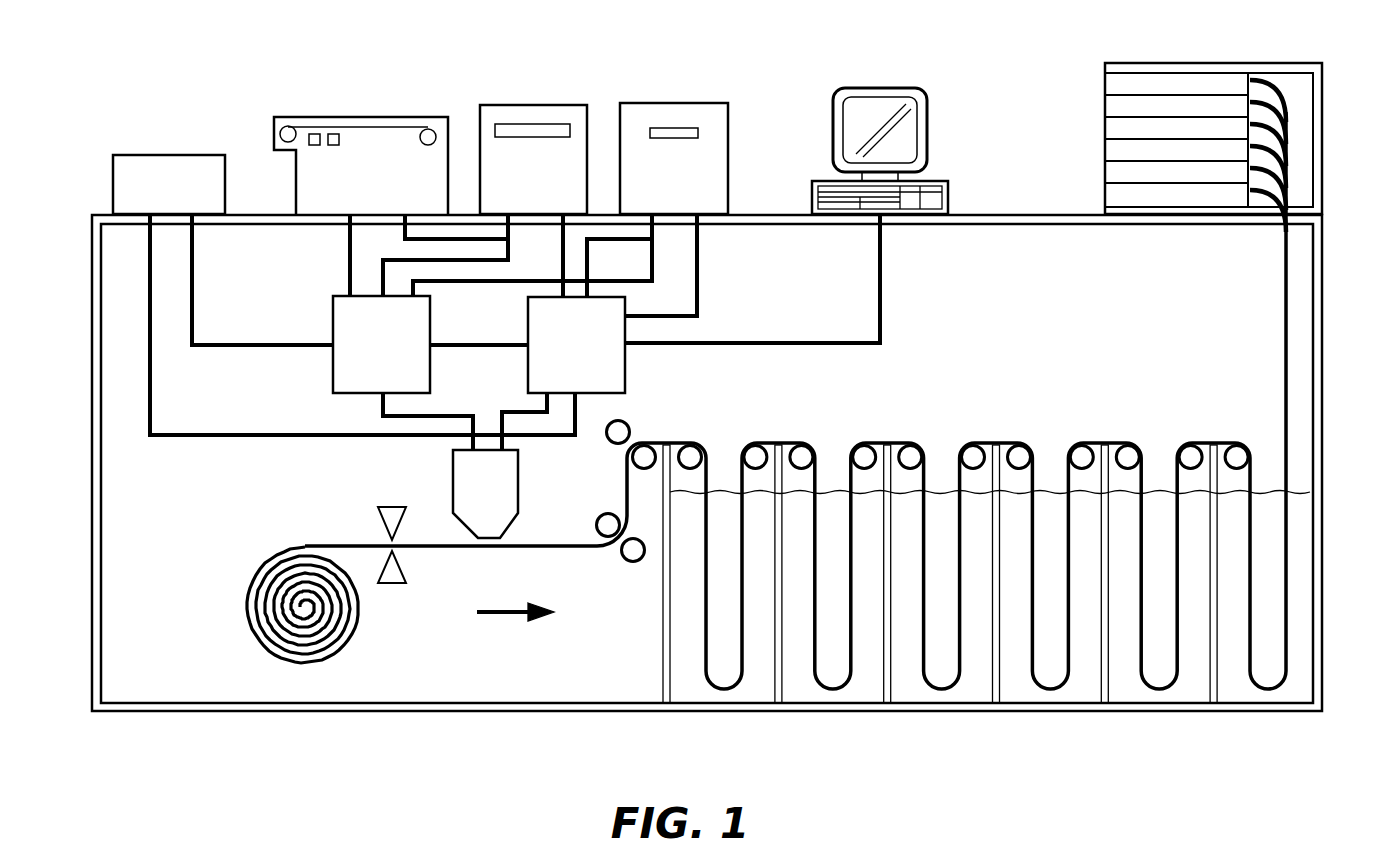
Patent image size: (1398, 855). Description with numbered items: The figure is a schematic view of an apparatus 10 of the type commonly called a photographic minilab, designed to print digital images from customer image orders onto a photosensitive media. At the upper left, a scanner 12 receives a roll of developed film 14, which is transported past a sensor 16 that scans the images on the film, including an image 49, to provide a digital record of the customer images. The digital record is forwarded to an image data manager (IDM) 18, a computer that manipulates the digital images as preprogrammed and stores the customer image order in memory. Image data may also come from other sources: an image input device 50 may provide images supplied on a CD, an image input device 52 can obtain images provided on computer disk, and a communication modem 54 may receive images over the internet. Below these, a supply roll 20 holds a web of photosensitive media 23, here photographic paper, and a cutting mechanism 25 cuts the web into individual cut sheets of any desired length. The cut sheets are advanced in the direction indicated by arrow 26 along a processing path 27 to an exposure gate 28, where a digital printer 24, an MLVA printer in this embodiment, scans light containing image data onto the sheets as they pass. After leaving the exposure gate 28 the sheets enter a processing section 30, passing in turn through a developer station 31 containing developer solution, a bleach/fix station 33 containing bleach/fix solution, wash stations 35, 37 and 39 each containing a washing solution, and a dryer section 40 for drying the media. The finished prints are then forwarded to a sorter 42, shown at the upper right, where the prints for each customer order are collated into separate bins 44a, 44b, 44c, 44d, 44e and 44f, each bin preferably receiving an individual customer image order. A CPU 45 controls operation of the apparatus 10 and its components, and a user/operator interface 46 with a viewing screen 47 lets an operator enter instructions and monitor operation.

The apparatus 10 is at (86, 515).
The scanner 12 is at (415, 106).
The roll of developed film 14 is at (289, 126).
The sensor 16 is at (316, 132).
The image 49 is at (336, 132).
The image data manager (IDM) 18 is at (331, 318).
The supply roll 20 is at (257, 582).
The web of photosensitive media 23 is at (312, 543).
The digital printer 24 is at (522, 463).
The cutting mechanism 25 is at (390, 505).
The arrow 26 is at (500, 613).
The processing path 27 is at (556, 540).
The exposure gate 28 is at (485, 548).
The processing section 30 is at (1075, 358).
The developer station 31 is at (750, 694).
The bleach/fix station 33 is at (858, 694).
The wash station 35 is at (968, 694).
The wash station 37 is at (1077, 694).
The wash station 39 is at (1186, 694).
The dryer section 40 is at (1296, 694).
The sorter 42 is at (1325, 141).
The bin 44a is at (1105, 85).
The bin 44b is at (1105, 107).
The bin 44c is at (1105, 129).
The bin 44d is at (1105, 151).
The bin 44e is at (1105, 172).
The bin 44f is at (1105, 193).
The CPU (computer) 45 is at (628, 373).
The user/operator interface 46 is at (950, 181).
The viewing screen 47 is at (873, 87).
The image input device 50 is at (525, 103).
The image input device 52 is at (664, 102).
The communication modem 54 is at (170, 152).